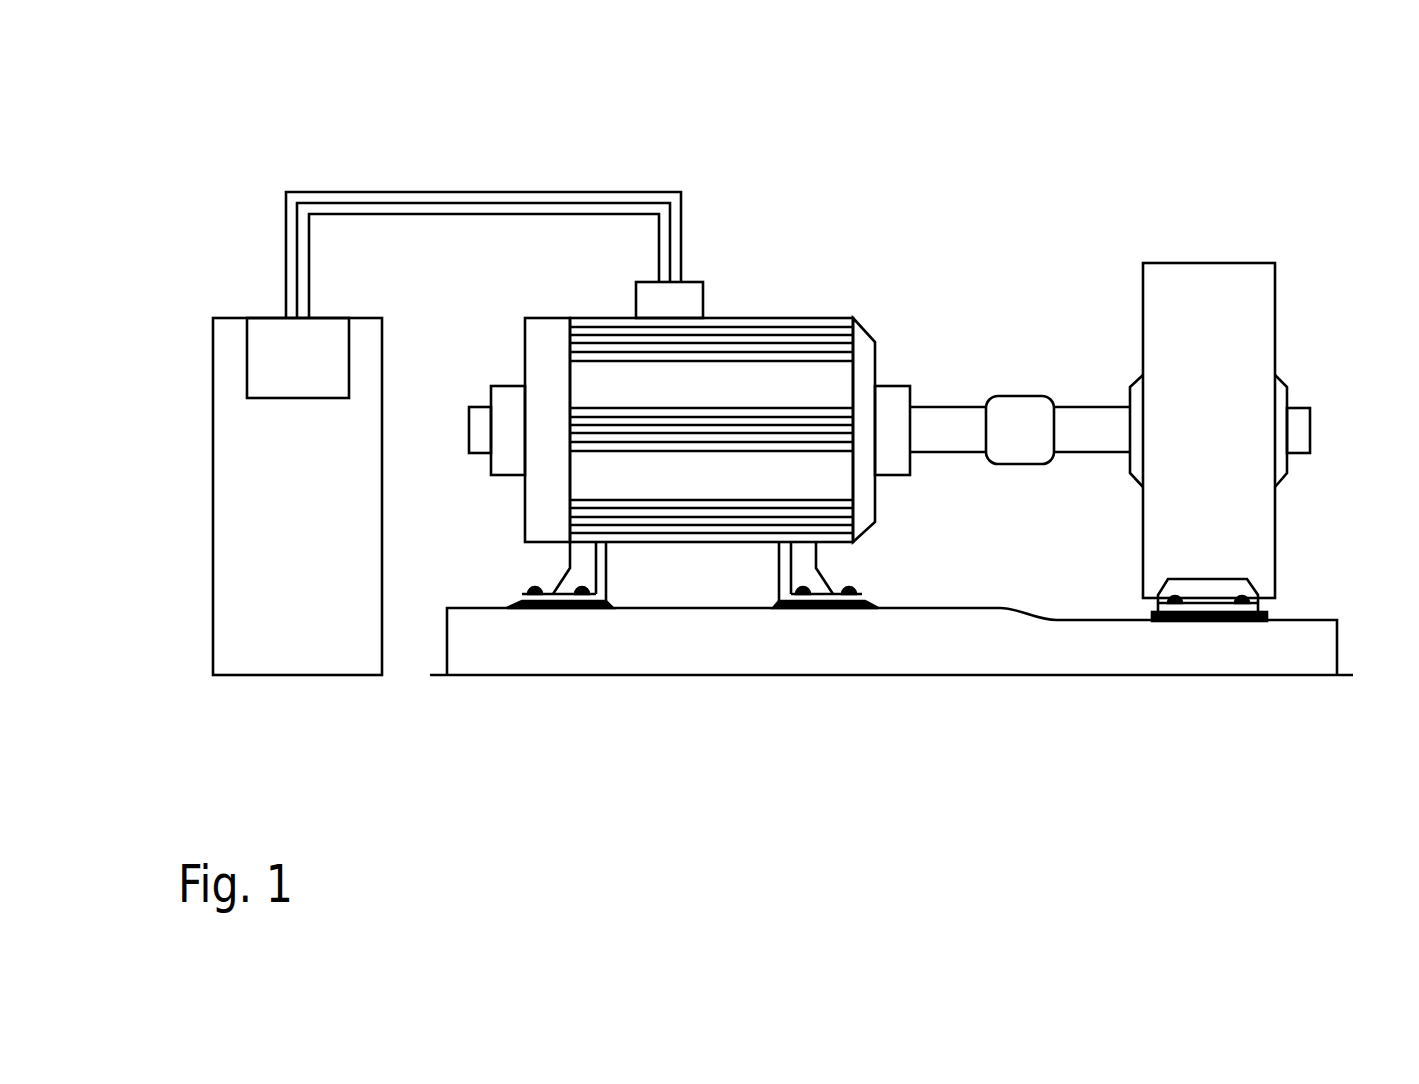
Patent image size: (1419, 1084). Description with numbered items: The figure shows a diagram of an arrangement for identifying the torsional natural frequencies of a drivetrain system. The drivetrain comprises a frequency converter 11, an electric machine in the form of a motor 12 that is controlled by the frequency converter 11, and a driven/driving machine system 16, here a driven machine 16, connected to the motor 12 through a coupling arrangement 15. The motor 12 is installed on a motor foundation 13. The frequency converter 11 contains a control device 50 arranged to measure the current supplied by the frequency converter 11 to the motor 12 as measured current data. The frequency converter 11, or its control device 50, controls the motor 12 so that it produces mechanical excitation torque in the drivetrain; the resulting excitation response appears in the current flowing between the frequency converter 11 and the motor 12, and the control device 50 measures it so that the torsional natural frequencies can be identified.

The frequency converter 11 is at (297, 587).
The control device 50 is at (464, 239).
The electric machine (motor) 12 is at (822, 397).
The motor foundation 13 is at (693, 648).
The coupling arrangement 15 is at (1013, 422).
The driven/driving machine system (driven machine) 16 is at (1188, 342).